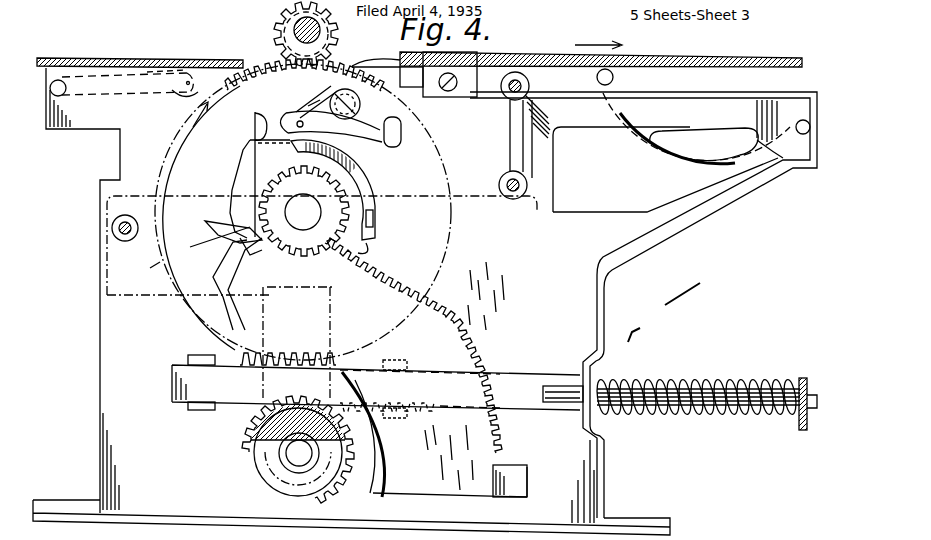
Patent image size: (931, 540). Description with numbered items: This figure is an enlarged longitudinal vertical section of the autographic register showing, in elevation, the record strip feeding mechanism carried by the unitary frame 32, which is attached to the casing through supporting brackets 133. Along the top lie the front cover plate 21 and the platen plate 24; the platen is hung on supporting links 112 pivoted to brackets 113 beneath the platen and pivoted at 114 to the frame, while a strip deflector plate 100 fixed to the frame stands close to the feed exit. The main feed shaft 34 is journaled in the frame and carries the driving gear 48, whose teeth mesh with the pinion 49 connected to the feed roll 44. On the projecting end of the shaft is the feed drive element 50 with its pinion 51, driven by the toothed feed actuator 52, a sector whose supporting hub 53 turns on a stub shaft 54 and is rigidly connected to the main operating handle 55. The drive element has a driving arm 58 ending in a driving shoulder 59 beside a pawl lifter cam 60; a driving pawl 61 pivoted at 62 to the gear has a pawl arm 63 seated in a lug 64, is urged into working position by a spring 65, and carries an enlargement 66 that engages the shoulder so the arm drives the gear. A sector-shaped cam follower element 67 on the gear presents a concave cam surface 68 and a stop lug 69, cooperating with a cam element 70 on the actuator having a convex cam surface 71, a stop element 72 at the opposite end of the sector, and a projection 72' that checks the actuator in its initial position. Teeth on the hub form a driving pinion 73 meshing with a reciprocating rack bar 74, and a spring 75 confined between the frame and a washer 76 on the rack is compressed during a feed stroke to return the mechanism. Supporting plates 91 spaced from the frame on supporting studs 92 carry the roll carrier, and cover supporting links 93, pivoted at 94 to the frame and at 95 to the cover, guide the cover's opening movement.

The front cover plate 21 is at (722, 57).
The platen plate 24 is at (108, 58).
The unitary frame 32 is at (431, 295).
The main feed shaft 34 is at (303, 212).
The feed roll 44 is at (272, 33).
The driving gear 48 is at (248, 366).
The pinion 49 is at (425, 52).
The feed drive element 50 is at (352, 205).
The pinion 51 is at (296, 170).
The feed actuator 52 is at (470, 347).
The supporting hub 53 is at (282, 462).
The stub shaft 54 is at (305, 462).
The main operating handle 55 is at (340, 306).
The driving arm 58 is at (240, 174).
The driving shoulder 59 is at (255, 112).
The pawl lifter cam 60 is at (250, 130).
The driving pawl 61 is at (304, 112).
The pivot 62 is at (360, 105).
The pawl arm 63 is at (339, 142).
The lug 64 is at (402, 135).
The spring 65 is at (316, 100).
The enlargement 66 is at (303, 126).
The cam follower element 67 is at (220, 228).
The concave cam surface 68 is at (246, 250).
The stop lug 69 is at (372, 249).
The cam element 70 is at (232, 290).
The convex cam surface 71 is at (208, 244).
The stop element 72 is at (530, 477).
The projection 72' is at (139, 273).
The driving pinion 73 is at (264, 412).
The rack bar 74 is at (522, 380).
The spring 75 is at (690, 380).
The washer 76 is at (802, 432).
The supporting plate 91 is at (148, 297).
The supporting stud 92 is at (505, 178).
The cover supporting link 93 is at (660, 150).
The pivot 94 is at (801, 120).
The pivot 95 is at (596, 77).
The strip deflector plate 100 is at (380, 55).
The supporting link 112 is at (136, 96).
The bracket 113 is at (189, 66).
The pivot 114 is at (61, 96).
The supporting bracket 133 is at (58, 495).